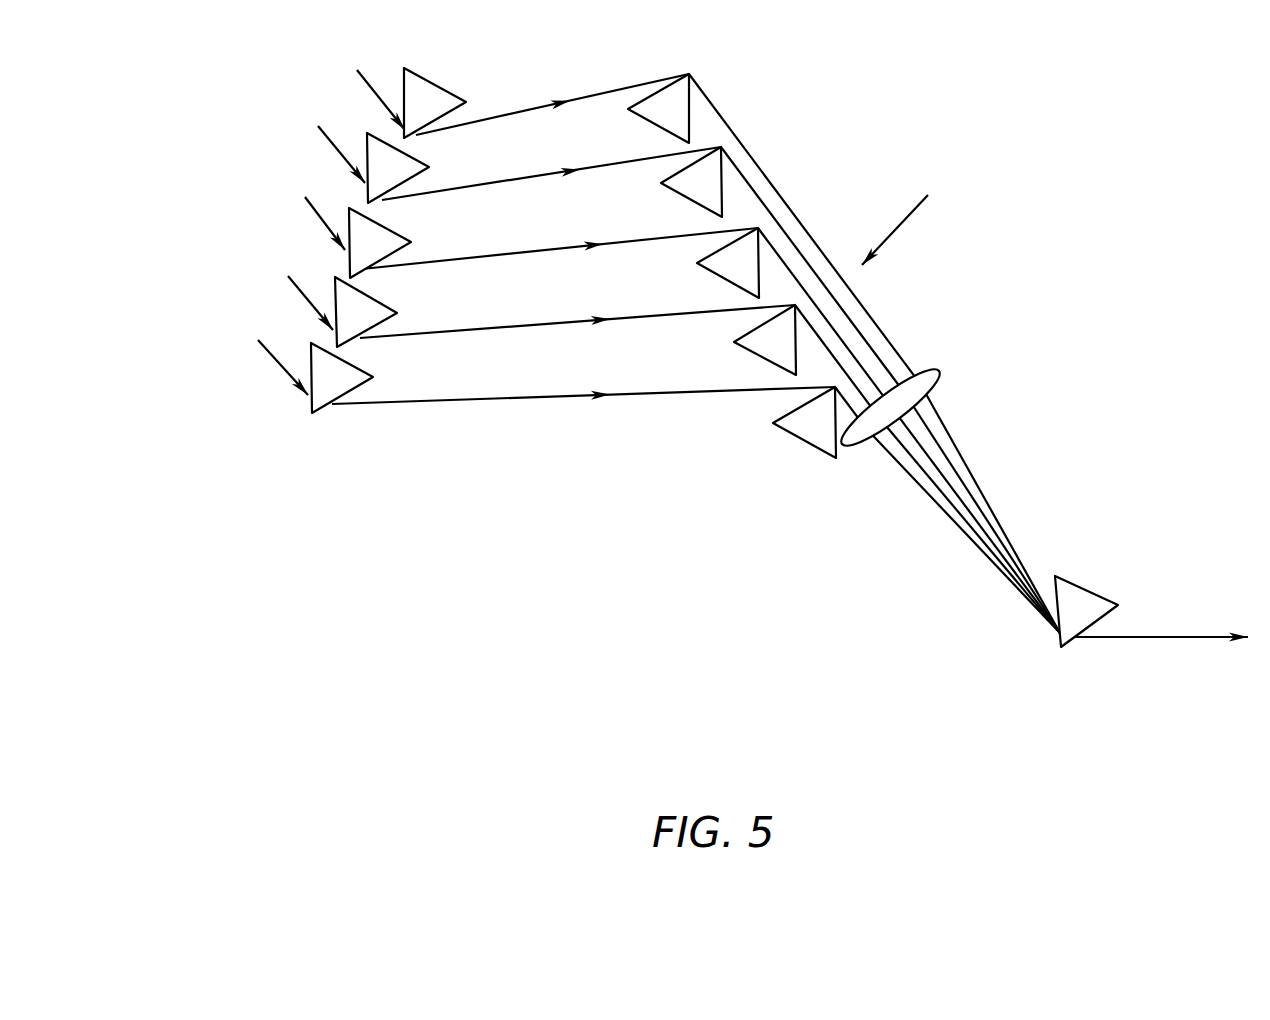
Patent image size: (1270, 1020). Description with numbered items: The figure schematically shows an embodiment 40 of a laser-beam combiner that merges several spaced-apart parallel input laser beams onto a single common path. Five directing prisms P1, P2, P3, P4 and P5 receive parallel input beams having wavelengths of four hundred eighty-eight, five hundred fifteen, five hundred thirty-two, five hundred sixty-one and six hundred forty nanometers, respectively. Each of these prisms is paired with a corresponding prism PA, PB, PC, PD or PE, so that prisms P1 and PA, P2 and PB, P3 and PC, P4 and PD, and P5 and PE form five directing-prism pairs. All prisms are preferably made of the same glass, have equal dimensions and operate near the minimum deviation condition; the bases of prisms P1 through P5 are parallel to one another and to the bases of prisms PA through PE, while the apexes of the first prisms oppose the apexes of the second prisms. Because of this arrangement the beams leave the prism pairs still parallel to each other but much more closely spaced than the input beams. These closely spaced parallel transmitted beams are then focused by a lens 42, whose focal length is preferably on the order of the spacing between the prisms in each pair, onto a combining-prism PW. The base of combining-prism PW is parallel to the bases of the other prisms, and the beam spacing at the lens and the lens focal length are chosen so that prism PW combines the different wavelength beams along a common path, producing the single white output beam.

The laser-beam combiner 40 is at (445, 648).
The lens 42 is at (930, 372).
The prism P1 is at (443, 96).
The prism P2 is at (415, 162).
The prism P3 is at (388, 230).
The prism P4 is at (370, 298).
The prism P5 is at (348, 365).
The prism PA is at (653, 115).
The prism PB is at (687, 189).
The prism PC is at (723, 273).
The prism PD is at (752, 345).
The prism PE is at (793, 430).
The combining-prism PW is at (1085, 598).